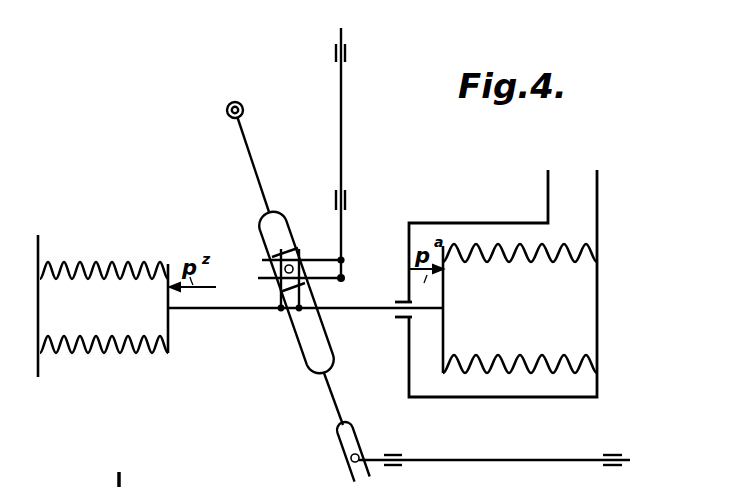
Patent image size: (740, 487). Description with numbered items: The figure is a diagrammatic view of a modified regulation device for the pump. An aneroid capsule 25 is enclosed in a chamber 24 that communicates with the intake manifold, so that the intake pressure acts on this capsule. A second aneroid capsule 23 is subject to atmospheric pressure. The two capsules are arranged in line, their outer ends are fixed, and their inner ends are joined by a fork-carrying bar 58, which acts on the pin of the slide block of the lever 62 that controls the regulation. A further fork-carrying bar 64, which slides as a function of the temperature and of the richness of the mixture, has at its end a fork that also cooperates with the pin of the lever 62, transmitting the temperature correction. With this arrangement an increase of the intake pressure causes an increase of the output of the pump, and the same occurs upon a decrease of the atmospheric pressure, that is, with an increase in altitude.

The second aneroid capsule 23 is at (103, 306).
The chamber 24 is at (583, 203).
The aneroid capsule 25 is at (520, 308).
The fork-carrying bar 58 is at (221, 311).
The lever 62 is at (257, 179).
The fork-carrying bar 64 is at (343, 142).